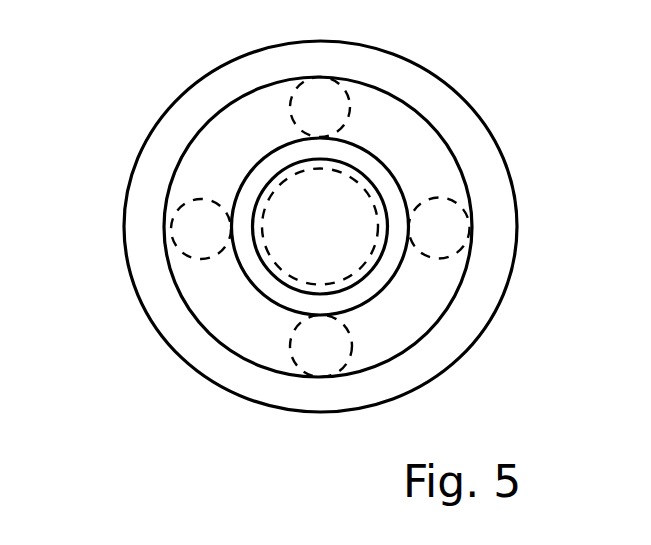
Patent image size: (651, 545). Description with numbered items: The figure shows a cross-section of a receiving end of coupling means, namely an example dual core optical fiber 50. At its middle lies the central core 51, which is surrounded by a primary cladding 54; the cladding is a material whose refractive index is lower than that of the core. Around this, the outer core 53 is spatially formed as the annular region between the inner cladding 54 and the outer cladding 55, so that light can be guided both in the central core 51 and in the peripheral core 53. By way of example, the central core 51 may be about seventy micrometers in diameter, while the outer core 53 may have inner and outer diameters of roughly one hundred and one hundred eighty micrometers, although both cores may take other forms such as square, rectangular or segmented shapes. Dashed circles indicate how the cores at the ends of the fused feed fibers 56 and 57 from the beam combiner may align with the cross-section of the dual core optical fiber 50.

The dual core optical fiber 50 is at (428, 67).
The central core 51 is at (352, 165).
The outer core 53 is at (218, 137).
The primary cladding 54 is at (277, 293).
The outer cladding 55 is at (150, 258).
The fused feed fiber 56 is at (265, 207).
The fused feed fiber 57 is at (433, 222).